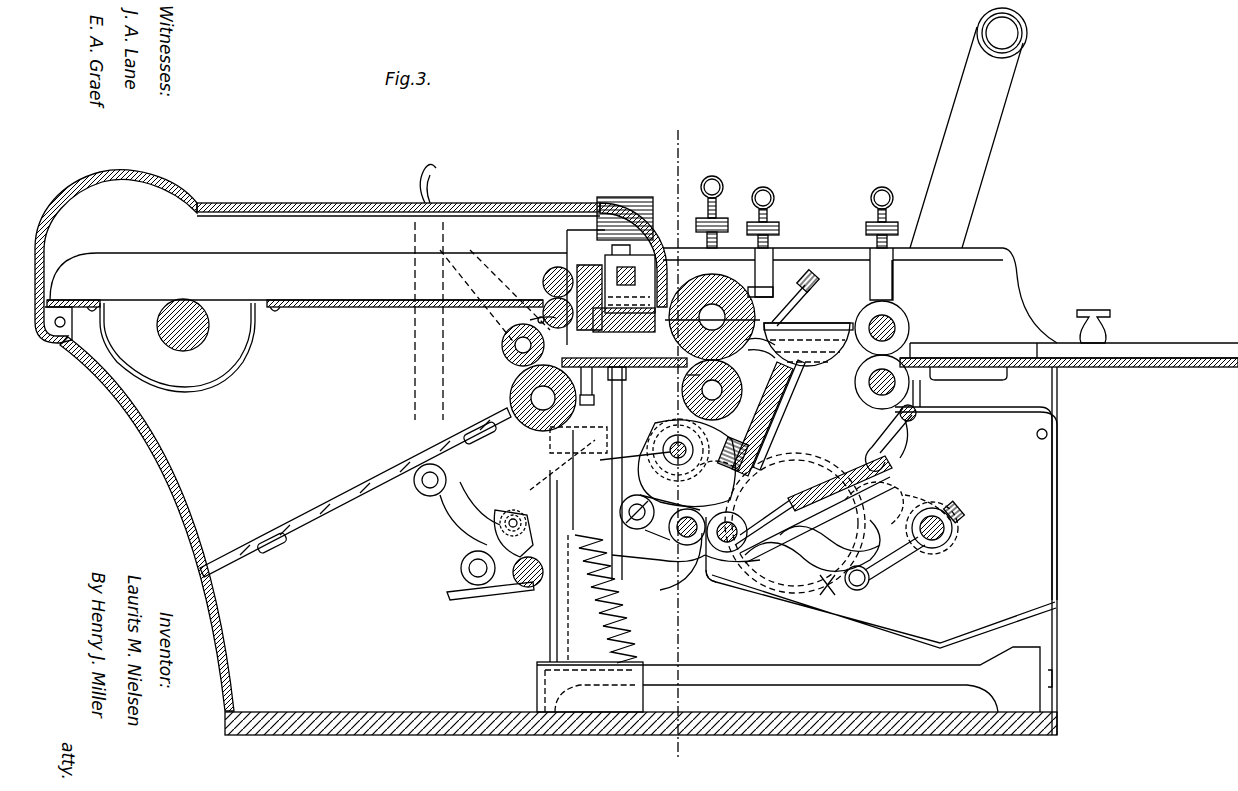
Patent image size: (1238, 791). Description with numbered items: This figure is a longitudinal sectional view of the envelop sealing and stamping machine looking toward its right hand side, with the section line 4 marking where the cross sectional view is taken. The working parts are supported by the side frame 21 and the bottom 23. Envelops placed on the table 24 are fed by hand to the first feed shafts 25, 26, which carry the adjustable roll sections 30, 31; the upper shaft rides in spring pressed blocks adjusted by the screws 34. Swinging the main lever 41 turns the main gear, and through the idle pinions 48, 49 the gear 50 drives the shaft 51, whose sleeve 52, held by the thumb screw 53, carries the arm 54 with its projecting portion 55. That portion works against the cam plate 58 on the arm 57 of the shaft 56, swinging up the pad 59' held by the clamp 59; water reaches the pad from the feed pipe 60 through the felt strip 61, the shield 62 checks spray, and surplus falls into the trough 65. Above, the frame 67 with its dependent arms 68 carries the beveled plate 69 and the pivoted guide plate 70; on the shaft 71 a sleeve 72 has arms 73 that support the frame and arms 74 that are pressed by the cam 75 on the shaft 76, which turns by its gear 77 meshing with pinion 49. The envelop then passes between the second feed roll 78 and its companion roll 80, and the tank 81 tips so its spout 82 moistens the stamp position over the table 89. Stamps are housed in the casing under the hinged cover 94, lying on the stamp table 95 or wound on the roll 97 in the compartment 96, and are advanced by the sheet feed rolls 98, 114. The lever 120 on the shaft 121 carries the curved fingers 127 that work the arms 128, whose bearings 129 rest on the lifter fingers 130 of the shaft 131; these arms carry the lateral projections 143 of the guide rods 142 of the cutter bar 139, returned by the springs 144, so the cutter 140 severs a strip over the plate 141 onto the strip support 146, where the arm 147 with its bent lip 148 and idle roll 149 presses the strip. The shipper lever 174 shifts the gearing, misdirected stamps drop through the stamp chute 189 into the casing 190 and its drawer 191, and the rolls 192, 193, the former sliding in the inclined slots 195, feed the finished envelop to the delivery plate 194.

The section line 4- 4 is at (688, 126).
The side frame 21 is at (797, 480).
The bottom 23 is at (852, 735).
The table 24 is at (1205, 338).
The first feed shaft 25 is at (960, 405).
The first feed shaft 26 is at (900, 328).
The roll section 30 is at (910, 385).
The roll section 31 is at (910, 315).
The adjusting screw 34 is at (866, 225).
The main lever 41 is at (968, 128).
The idle pinion 48 is at (880, 505).
The idle pinion 49 is at (699, 479).
The gear 50 is at (945, 503).
The shaft 51 is at (958, 540).
The sleeve 52 is at (953, 527).
The thumb screw 53 is at (962, 505).
The arm 54 is at (905, 560).
The laterally projecting portion 55 is at (872, 585).
The shaft 56 is at (725, 552).
The arm 57 is at (765, 516).
The cam plate 58 is at (812, 564).
The clamp 59 is at (810, 523).
The pad 59' is at (862, 480).
The water feed pipe 60 is at (918, 418).
The felt strip 61 is at (912, 440).
The shield 62 is at (872, 418).
The trough 65 is at (975, 632).
The frame 67 is at (765, 428).
The dependent arm 68 is at (724, 454).
The plate 69 is at (790, 415).
The guide plate 70 is at (752, 355).
The shaft 71 is at (683, 538).
The sleeve 72 is at (658, 568).
The arm 73 is at (715, 560).
The arm 74 is at (652, 530).
The cam 75 is at (692, 445).
The shaft 76 is at (622, 461).
The gear 77 is at (640, 475).
The second feed roll 78 is at (688, 410).
The companion roll 80 is at (720, 275).
The tank 81 is at (810, 305).
The spout 82 is at (775, 352).
The table 89 is at (688, 377).
The hinged cover 94 is at (170, 205).
The stamp table 95 is at (305, 308).
The compartment 96 is at (243, 360).
The roll 97 is at (207, 330).
The sheet feed roll 98 is at (530, 320).
The upper sheet feed roll 114 is at (560, 275).
The lever 120 is at (437, 180).
The shaft 121 is at (422, 488).
The curved finger 127 is at (445, 515).
The arm 128 is at (589, 492).
The projecting bearing 129 is at (461, 570).
The lifter finger 130 is at (470, 598).
The shaft 131 is at (522, 585).
The cutter bar 139 is at (552, 270).
The cutter 140 is at (575, 265).
The plate 141 is at (545, 305).
The guide rod 142 is at (540, 478).
The lateral projection 143 is at (531, 494).
The spring 144 is at (625, 650).
The stamp strip support 146 is at (585, 340).
The arm 147 is at (648, 240).
The bent lip 148 is at (612, 255).
The idle roll 149 is at (630, 330).
The shipper lever 174 is at (1105, 310).
The stamp chute 189 is at (548, 654).
The casing 190 is at (537, 680).
The drawer 191 is at (1052, 680).
The roll 192 is at (502, 350).
The roll 193 is at (510, 395).
The delivery plate 194 is at (290, 515).
The inclined slot 195 is at (455, 262).